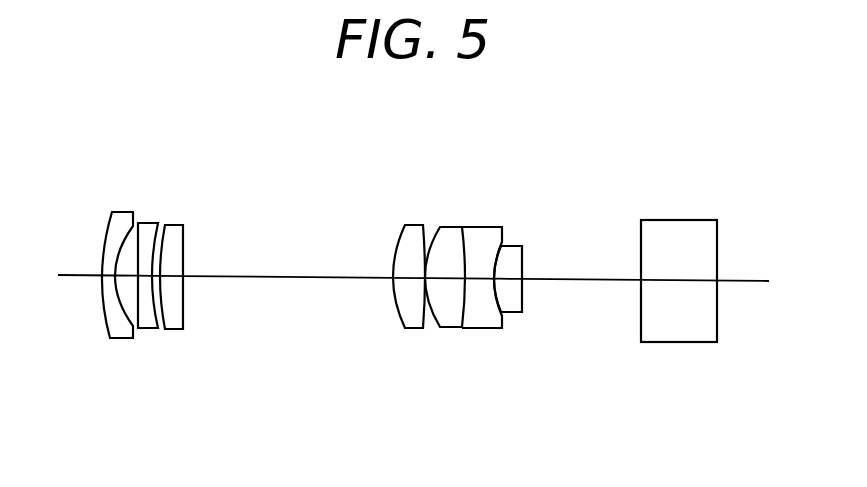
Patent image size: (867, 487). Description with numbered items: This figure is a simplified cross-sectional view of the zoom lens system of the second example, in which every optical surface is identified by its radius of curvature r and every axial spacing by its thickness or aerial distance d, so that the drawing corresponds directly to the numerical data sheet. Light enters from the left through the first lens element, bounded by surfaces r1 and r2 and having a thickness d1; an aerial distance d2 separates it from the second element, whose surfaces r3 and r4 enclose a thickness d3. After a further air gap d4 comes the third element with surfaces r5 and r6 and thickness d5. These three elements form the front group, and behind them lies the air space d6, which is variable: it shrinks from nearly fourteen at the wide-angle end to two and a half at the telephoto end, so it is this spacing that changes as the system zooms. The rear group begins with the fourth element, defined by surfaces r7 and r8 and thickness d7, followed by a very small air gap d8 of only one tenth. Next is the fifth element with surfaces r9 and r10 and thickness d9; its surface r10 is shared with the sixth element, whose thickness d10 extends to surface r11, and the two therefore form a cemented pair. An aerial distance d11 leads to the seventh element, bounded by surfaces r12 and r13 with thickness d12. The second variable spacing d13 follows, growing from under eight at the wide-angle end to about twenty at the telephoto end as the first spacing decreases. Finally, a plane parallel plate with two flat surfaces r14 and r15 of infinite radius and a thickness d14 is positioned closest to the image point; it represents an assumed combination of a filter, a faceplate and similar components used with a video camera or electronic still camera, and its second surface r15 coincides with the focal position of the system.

The radius of curvature of first lens surface r1 is at (110, 215).
The radius of curvature of second lens surface r2 is at (130, 215).
The radius of curvature of third lens surface r3 is at (141, 222).
The radius of curvature of fourth lens surface r4 is at (160, 222).
The radius of curvature of fifth lens surface r5 is at (170, 224).
The radius of curvature of sixth lens surface r6 is at (183, 226).
The radius of curvature of seventh lens surface r7 is at (402, 225).
The radius of curvature of eighth lens surface r8 is at (423, 225).
The radius of curvature of ninth lens surface r9 is at (440, 227).
The radius of curvature of tenth lens surface r10 is at (462, 227).
The radius of curvature of eleventh lens surface r11 is at (502, 242).
The radius of curvature of twelfth lens surface r12 is at (508, 246).
The radius of curvature of thirteenth lens surface r13 is at (522, 246).
The radius of curvature of fourteenth surface r14 is at (641, 221).
The radius of curvature of fifteenth surface r15 is at (718, 221).
The thickness of first lens element d1 is at (108, 340).
The aerial distance between first and second lens elements d2 is at (125, 340).
The thickness of second lens element d3 is at (148, 330).
The aerial distance between second and third lens elements d4 is at (161, 330).
The thickness of third lens element d5 is at (181, 330).
The variable aerial distance between third and fourth lens elements d6 is at (283, 278).
The thickness of fourth lens element d7 is at (398, 330).
The aerial distance between fourth and fifth lens elements d8 is at (411, 330).
The thickness of fifth lens element d9 is at (445, 328).
The thickness of sixth lens element d10 is at (472, 328).
The aerial distance between sixth and seventh lens elements d11 is at (492, 328).
The thickness of seventh lens element d12 is at (512, 313).
The variable aerial distance between seventh lens element and plane parallel plate d13 is at (582, 281).
The thickness of plane parallel plate d14 is at (682, 281).